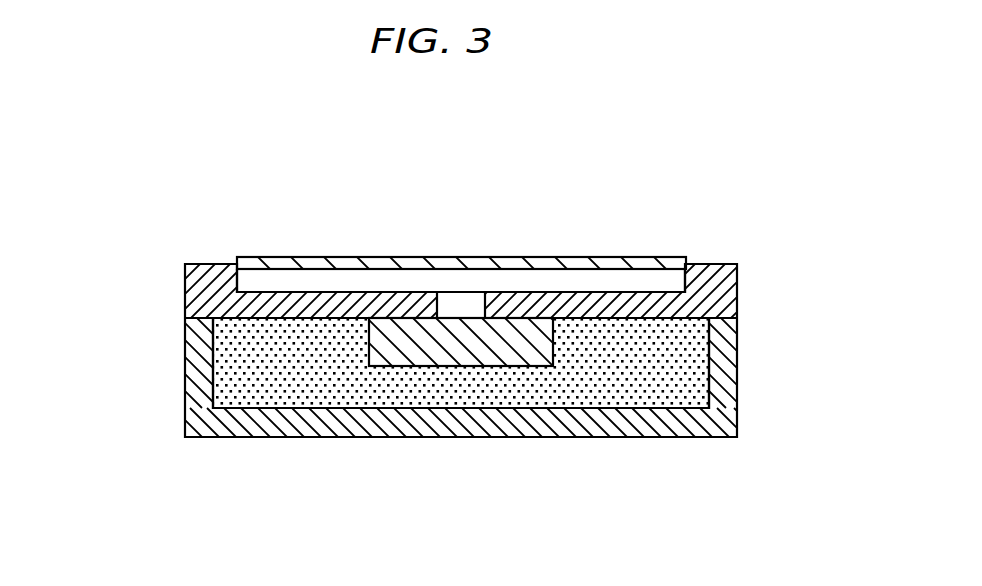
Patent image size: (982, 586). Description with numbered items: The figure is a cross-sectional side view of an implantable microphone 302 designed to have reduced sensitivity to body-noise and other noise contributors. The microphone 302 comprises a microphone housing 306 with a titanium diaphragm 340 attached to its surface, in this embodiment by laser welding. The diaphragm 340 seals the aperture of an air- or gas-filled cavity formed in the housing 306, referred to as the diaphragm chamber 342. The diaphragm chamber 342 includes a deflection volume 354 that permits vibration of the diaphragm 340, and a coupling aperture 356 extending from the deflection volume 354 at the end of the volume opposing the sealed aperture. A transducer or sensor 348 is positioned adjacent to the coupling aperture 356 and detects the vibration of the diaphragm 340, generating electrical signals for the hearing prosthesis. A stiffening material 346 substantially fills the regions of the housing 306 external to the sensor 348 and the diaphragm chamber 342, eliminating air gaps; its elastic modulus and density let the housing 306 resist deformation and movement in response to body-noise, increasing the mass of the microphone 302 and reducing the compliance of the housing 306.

The implantable microphone 302 is at (226, 190).
The microphone housing 306 is at (185, 380).
The diaphragm 340 is at (362, 257).
The diaphragm chamber 342 is at (508, 283).
The deflection volume 354 is at (673, 278).
The coupling aperture 356 is at (463, 303).
The sensor 348 is at (388, 366).
The stiffening material 346 is at (685, 377).